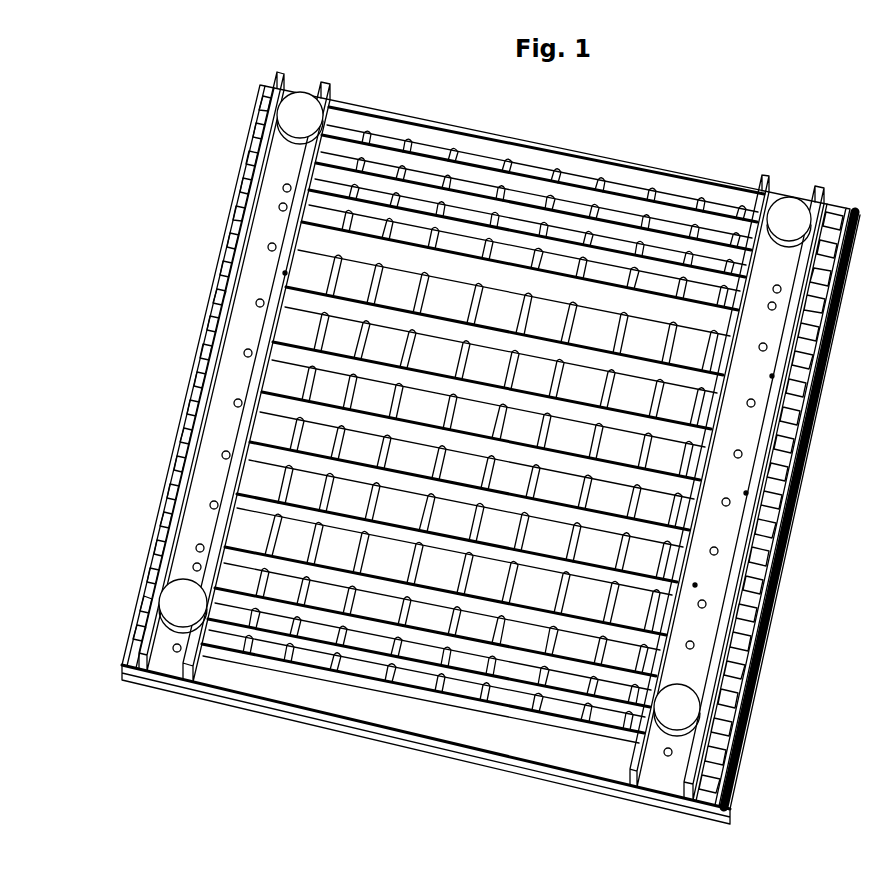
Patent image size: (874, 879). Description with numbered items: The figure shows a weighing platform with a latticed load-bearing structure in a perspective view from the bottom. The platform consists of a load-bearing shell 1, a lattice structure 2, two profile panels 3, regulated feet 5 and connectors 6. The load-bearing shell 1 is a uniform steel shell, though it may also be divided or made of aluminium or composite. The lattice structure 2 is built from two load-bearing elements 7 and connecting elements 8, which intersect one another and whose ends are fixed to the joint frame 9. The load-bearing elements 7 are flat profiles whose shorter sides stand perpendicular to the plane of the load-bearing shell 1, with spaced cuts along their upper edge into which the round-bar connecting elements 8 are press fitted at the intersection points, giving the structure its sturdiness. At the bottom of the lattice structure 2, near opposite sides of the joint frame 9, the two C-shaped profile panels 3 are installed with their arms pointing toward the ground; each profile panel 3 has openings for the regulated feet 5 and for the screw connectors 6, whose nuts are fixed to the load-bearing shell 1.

The load-bearing shell 1 is at (125, 680).
The lattice structure 2 is at (170, 448).
The profile panel 3 is at (247, 317).
The regulated feet 5 is at (173, 612).
The connectors 6 is at (268, 250).
The load-bearing elements 7 is at (292, 567).
The connecting elements 8 is at (553, 610).
The joint frame 9 is at (402, 722).